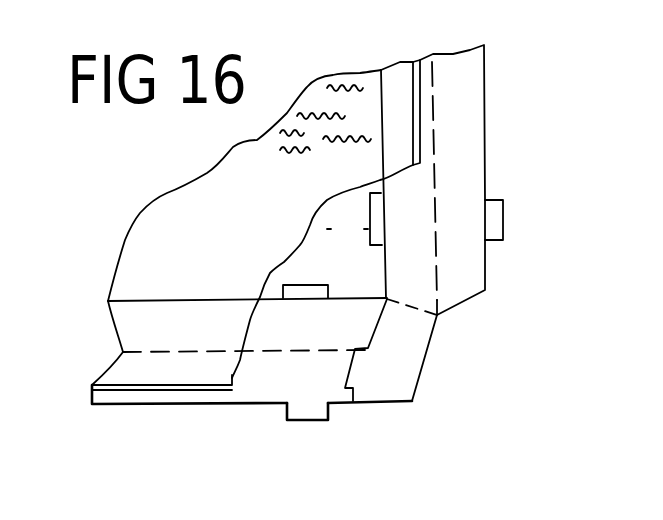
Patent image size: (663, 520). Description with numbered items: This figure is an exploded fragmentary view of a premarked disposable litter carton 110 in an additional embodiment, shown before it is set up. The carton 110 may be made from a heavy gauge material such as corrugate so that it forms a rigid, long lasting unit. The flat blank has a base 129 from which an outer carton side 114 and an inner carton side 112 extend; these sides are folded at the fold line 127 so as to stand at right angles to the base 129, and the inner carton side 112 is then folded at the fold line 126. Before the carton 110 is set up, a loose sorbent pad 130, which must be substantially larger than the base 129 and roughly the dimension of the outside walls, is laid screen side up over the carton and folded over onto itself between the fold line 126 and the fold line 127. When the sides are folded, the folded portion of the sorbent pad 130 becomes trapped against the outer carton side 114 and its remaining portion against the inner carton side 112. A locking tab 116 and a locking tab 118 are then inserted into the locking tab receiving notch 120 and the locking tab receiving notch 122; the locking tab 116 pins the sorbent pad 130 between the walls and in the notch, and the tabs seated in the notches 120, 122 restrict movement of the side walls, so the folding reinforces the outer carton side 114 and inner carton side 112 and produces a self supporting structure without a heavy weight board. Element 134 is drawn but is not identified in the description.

The disposable litter carton 110 is at (510, 102).
The inner carton side 112 is at (110, 368).
The outer carton side 114 is at (122, 317).
The locking tab 116 is at (315, 412).
The locking tab 118 is at (498, 222).
The locking tab receiving notch 120 is at (298, 287).
The locking tab receiving notch 122 is at (364, 240).
The fold line 126 is at (123, 351).
The fold line 127 is at (148, 300).
The base 129 is at (347, 228).
The sorbent pad 130 is at (357, 78).
The plate 134 is at (420, 62).